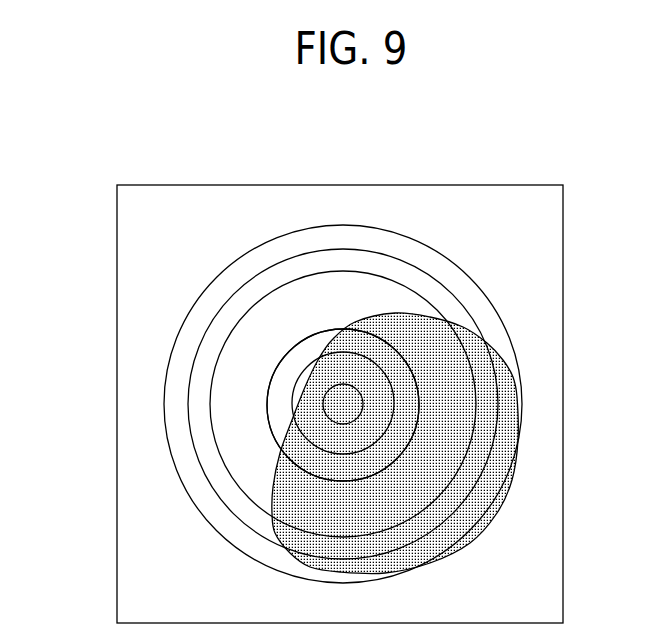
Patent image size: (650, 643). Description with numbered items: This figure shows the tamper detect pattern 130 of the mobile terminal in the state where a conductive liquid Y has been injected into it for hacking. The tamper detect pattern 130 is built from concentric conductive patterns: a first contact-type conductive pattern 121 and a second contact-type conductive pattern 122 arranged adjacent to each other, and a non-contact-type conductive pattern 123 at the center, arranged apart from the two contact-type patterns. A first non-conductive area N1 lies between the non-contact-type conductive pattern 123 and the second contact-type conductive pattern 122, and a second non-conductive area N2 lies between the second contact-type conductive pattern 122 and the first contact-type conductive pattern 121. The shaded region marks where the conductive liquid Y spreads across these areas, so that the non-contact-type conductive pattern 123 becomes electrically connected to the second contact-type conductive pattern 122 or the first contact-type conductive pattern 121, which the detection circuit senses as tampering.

The tamper detect pattern 130 is at (192, 520).
The first contact-type conductive pattern 121 is at (203, 438).
The second contact-type conductive pattern 122 is at (285, 382).
The non-contact-type conductive pattern 123 is at (342, 403).
The first non-conductive area N1 is at (378, 378).
The second non-conductive area N2 is at (448, 440).
The conductive liquid Y is at (389, 317).